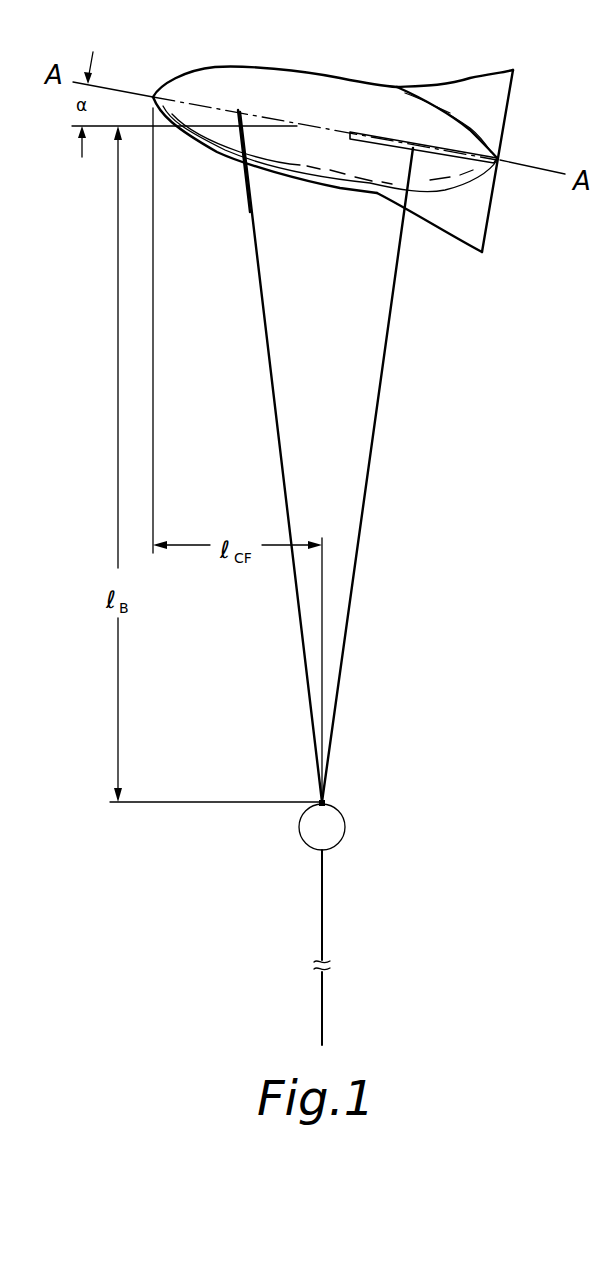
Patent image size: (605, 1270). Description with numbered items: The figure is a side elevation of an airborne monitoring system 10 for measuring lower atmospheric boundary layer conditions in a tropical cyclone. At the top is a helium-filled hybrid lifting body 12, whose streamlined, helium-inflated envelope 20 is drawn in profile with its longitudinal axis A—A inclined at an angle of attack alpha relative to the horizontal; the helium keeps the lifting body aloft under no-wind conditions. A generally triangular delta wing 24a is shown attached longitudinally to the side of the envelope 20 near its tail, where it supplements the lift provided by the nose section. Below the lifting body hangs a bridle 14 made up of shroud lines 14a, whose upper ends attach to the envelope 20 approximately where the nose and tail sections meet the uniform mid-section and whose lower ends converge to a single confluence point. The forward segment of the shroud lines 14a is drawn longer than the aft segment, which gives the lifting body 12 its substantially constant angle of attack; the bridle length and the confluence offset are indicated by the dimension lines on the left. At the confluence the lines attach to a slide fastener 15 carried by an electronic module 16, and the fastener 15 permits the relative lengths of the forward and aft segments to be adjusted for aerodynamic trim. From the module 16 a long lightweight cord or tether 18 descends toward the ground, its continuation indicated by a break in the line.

The airborne monitoring system 10 is at (271, 433).
The hybrid lifting body 12 is at (221, 152).
The bridle 14 is at (372, 447).
The shroud line 14a is at (266, 334).
The slide fastener 15 is at (330, 802).
The electronic module 16 is at (339, 831).
The tether 18 is at (325, 905).
The envelope 20 is at (260, 74).
The delta wing 24a is at (360, 142).